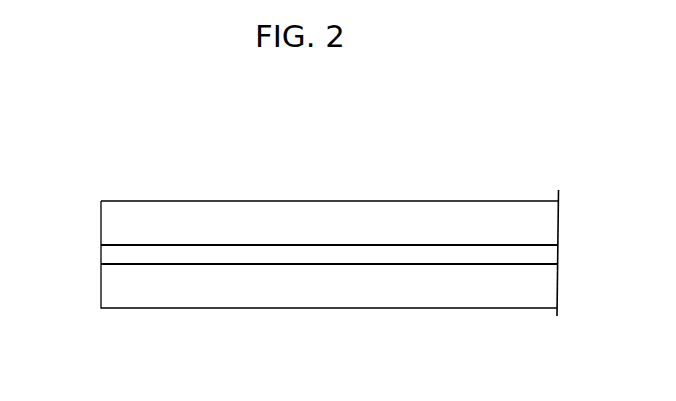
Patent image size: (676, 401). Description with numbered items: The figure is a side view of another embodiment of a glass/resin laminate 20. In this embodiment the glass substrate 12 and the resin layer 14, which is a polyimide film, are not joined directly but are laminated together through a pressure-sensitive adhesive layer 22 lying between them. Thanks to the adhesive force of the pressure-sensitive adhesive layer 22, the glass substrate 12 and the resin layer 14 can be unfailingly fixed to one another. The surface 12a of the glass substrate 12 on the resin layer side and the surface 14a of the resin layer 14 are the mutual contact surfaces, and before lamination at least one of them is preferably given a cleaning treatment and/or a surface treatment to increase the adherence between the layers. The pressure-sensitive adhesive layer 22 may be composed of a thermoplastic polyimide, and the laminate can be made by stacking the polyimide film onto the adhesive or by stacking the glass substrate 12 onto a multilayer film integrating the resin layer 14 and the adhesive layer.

The glass/resin laminate 20 is at (64, 140).
The glass substrate 12 is at (101, 223).
The surface of the glass substrate 12a is at (333, 245).
The pressure-sensitive adhesive layer 22 is at (101, 258).
The resin layer 14 is at (101, 287).
The surface of the resin layer 14a is at (295, 264).